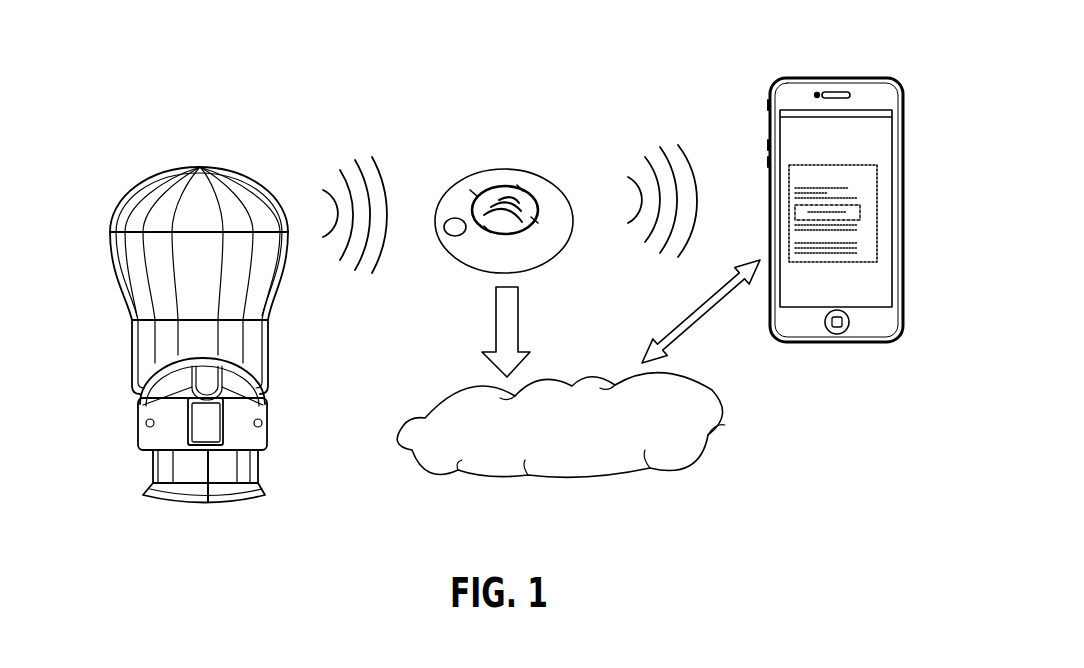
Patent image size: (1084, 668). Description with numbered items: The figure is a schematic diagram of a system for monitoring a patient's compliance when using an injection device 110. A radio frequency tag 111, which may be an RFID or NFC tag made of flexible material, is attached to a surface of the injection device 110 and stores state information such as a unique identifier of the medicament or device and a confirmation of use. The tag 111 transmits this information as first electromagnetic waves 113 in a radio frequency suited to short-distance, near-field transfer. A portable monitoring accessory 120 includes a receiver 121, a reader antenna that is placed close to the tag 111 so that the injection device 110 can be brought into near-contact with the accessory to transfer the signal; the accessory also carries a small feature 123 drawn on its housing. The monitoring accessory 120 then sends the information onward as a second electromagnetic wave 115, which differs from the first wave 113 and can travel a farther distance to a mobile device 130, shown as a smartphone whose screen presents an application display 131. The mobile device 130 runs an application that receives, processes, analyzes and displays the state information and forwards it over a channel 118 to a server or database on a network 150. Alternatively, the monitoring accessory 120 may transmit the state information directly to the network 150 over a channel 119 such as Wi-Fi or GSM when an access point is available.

The injection device 110 is at (122, 257).
The radio frequency tag 111 is at (197, 425).
The first electromagnetic waves 113 is at (372, 158).
The second electromagnetic wave 115 is at (678, 145).
The channel 118 is at (693, 330).
The channel 119 is at (518, 303).
The monitoring accessory 120 is at (533, 180).
The receiver 121 is at (493, 188).
The hub port / indicator 123 is at (447, 233).
The mobile device 130 is at (888, 122).
The application display 131 is at (873, 186).
The network 150 is at (667, 451).